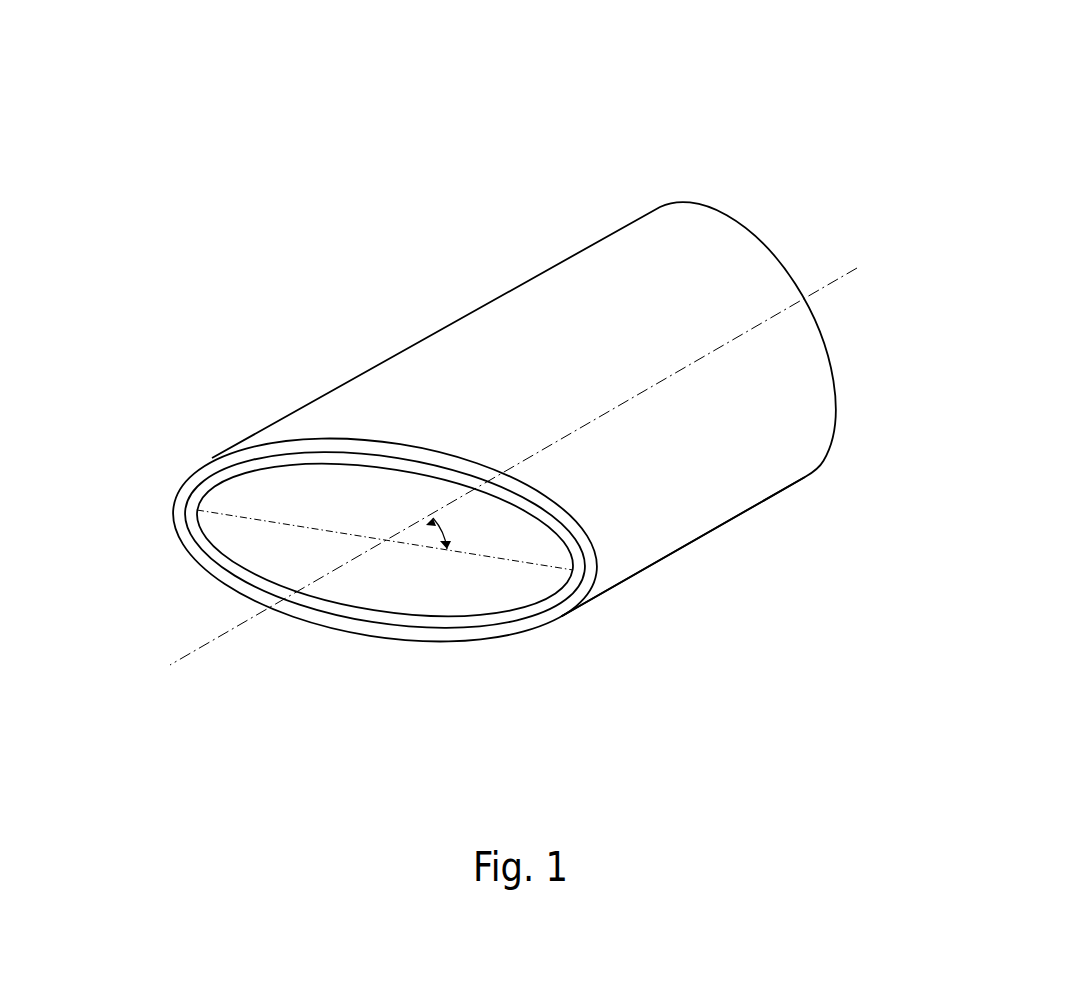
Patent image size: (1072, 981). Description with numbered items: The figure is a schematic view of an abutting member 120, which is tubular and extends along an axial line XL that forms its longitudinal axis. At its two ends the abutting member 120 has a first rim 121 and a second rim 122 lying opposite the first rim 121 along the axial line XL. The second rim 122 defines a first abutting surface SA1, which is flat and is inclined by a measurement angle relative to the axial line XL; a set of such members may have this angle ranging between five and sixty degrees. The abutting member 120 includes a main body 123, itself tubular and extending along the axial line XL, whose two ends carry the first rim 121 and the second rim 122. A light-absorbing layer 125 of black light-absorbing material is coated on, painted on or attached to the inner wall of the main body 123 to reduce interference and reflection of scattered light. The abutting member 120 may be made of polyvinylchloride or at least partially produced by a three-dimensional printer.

The abutting member 120 is at (1043, 83).
The first rim 121 is at (732, 220).
The second rim 122 is at (250, 447).
The main body 123 is at (635, 548).
The light-absorbing layer 125 is at (487, 602).
The first abutting surface SA1 is at (193, 545).
The axial line XL is at (833, 283).